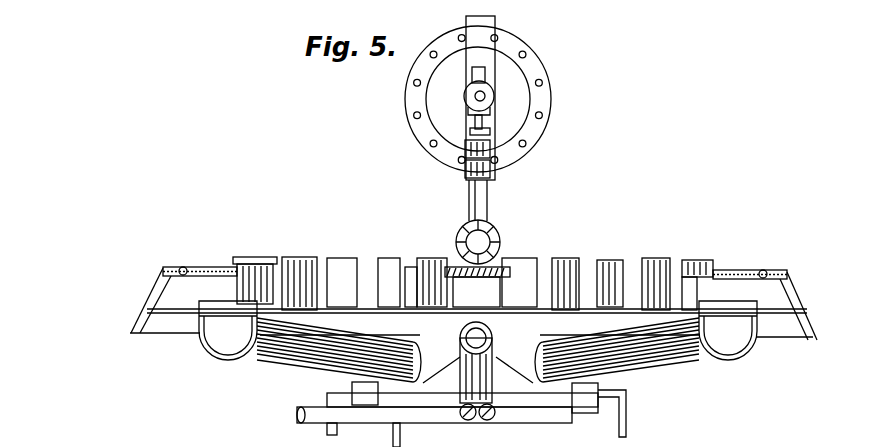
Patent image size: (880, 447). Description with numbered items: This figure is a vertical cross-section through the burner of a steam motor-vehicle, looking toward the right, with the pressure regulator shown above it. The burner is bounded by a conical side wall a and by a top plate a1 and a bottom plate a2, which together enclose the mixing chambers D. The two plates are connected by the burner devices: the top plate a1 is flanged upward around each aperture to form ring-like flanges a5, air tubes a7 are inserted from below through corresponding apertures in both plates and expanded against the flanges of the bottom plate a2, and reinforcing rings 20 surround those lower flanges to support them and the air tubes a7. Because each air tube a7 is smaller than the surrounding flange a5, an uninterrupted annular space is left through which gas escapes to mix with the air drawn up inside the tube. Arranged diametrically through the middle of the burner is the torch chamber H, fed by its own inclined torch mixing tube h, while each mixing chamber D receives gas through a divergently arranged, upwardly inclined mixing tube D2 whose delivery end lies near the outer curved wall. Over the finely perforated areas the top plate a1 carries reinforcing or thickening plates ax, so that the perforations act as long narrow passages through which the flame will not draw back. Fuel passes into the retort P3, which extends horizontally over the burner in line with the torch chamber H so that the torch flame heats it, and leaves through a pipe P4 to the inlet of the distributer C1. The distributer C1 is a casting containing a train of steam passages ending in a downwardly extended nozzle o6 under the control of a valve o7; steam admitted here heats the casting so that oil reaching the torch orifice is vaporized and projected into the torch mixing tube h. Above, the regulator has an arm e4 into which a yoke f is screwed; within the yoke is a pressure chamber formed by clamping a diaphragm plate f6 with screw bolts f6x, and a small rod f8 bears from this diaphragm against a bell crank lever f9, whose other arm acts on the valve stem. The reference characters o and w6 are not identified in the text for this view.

The yoke f is at (487, 18).
The second diaphragm plate f6 is at (520, 88).
The screw bolts f6x is at (526, 53).
The small rod f8 is at (464, 94).
The bell crank lever f9 is at (475, 96).
The arm e4 is at (470, 130).
The retort P3 is at (496, 234).
The mixing chamber D is at (163, 288).
The air tube a7 is at (265, 257).
The ring-like flange a5 is at (348, 258).
The top plate a1 is at (413, 260).
The conical side wall a is at (432, 260).
The reinforcing ring 20 is at (500, 289).
The reinforcing plate ax is at (205, 267).
The torch chamber H is at (477, 287).
The mixing tube D2 is at (275, 360).
The torch mixing tube h is at (492, 366).
The pipe P4 is at (488, 322).
The bottom plate a2 is at (435, 310).
The bracket w6 is at (524, 312).
The distributer C1 is at (443, 381).
The pipe o is at (313, 423).
The nozzle o6 is at (393, 430).
The valve o7 is at (400, 435).